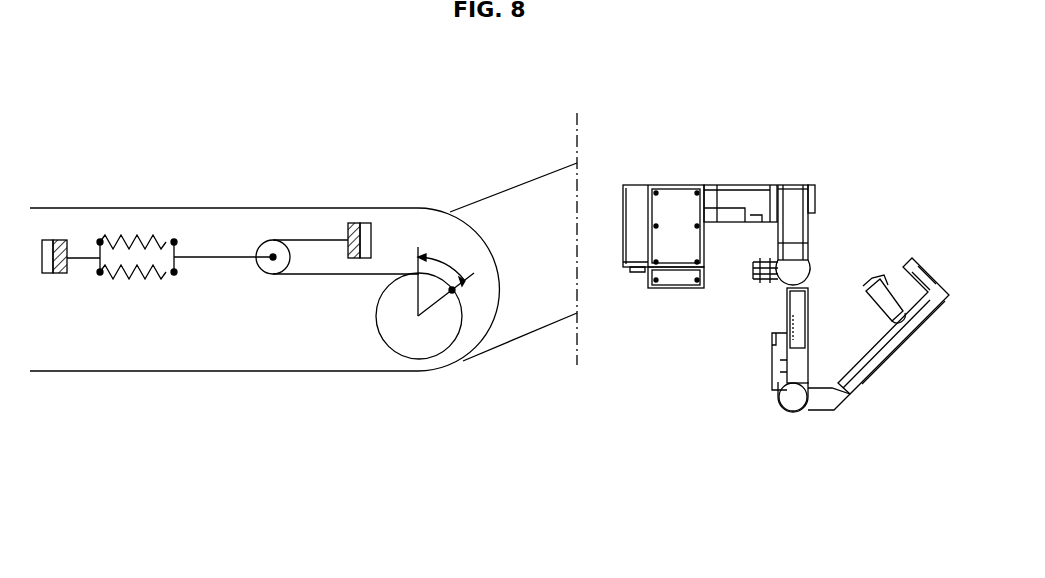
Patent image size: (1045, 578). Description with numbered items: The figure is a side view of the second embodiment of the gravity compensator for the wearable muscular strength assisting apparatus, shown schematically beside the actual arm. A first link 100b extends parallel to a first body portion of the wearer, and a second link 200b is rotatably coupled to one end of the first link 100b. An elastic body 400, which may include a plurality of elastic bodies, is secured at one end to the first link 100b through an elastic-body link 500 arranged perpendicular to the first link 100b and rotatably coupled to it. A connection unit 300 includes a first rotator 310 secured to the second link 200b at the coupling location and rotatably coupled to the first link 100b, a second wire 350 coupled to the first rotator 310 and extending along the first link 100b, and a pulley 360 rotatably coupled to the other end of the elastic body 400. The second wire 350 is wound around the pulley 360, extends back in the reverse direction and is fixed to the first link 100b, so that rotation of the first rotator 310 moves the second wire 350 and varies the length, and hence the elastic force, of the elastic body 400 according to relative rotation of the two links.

The first link 100b is at (260, 208).
The second link 200b is at (518, 202).
The connection unit 300 is at (386, 368).
The first rotator 310 is at (422, 344).
The second wire 350 is at (328, 275).
The pulley 360 is at (273, 262).
The elastic body 400 is at (132, 267).
The elastic-body link 500 is at (82, 258).